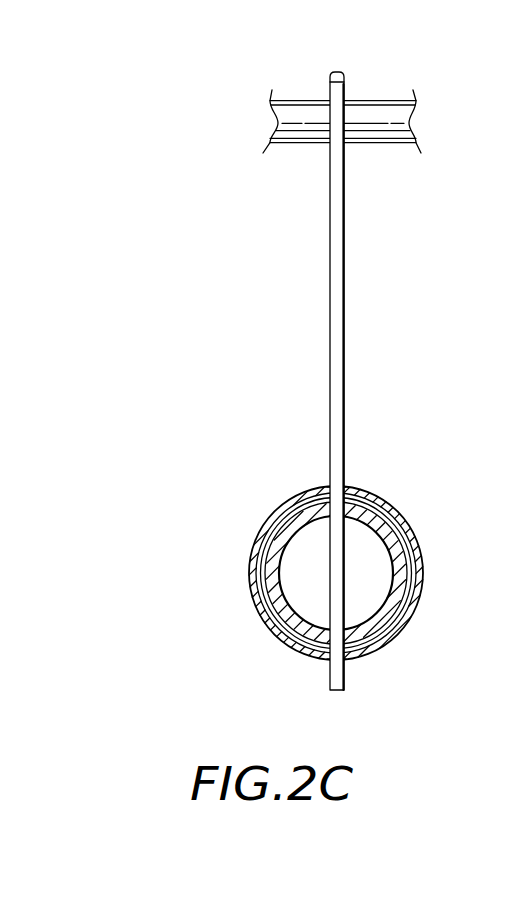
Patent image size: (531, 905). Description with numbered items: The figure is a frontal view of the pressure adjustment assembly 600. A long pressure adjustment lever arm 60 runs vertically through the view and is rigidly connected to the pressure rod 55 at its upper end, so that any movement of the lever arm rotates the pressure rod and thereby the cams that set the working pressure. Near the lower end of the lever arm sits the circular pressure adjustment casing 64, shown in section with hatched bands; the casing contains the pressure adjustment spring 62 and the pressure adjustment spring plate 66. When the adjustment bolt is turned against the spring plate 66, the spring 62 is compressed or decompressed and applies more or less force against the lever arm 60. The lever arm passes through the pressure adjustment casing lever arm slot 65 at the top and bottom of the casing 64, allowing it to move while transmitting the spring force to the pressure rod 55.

The pressure rod 55 is at (397, 101).
The pressure adjustment assembly 600 is at (422, 250).
The pressure adjustment lever arm 60 is at (345, 315).
The pressure adjustment spring 62 is at (317, 656).
The pressure adjustment casing 64 is at (423, 568).
The pressure adjustment casing lever arm slot 65 is at (345, 487).
The pressure adjustment spring plate 66 is at (307, 512).